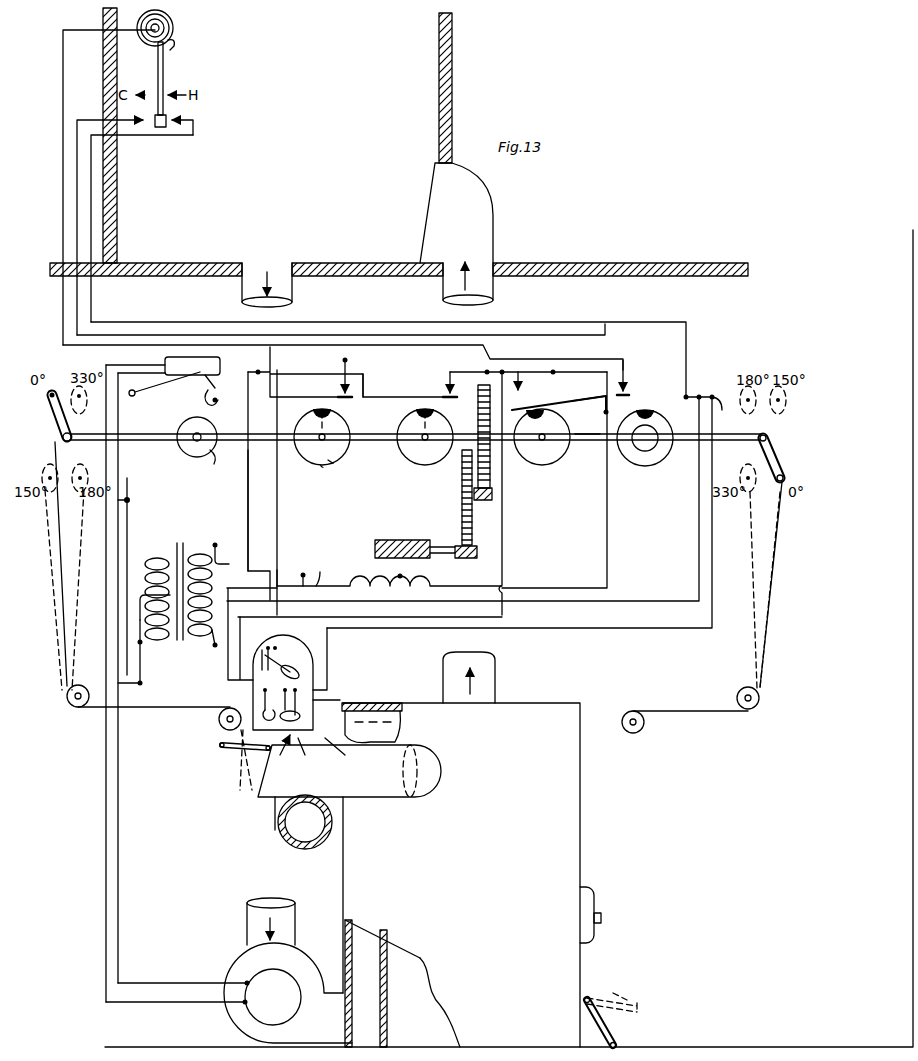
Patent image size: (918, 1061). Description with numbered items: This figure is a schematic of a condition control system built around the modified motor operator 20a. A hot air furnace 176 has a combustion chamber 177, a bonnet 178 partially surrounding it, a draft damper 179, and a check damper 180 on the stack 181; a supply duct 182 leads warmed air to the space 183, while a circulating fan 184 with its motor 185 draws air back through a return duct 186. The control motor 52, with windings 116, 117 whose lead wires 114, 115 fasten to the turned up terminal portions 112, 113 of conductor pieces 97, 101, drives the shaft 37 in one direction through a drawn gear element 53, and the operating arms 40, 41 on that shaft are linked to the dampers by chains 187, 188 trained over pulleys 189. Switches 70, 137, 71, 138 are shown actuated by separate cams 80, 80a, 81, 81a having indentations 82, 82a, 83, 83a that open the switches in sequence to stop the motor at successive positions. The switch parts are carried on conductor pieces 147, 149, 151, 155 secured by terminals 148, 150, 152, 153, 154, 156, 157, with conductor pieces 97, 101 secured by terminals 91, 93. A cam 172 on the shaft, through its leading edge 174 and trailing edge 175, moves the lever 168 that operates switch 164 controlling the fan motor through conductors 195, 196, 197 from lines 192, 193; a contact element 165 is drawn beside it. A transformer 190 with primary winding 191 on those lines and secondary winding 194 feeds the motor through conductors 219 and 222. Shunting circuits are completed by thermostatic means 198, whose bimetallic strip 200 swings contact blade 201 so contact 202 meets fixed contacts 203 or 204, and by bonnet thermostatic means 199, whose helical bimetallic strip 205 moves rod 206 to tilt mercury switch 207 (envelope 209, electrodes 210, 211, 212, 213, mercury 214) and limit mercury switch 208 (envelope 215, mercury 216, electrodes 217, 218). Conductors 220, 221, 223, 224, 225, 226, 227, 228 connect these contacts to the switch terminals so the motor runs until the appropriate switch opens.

The motor operator 20a is at (760, 300).
The shaft 37 is at (590, 442).
The operating arm 40 is at (778, 455).
The operating arm 41 is at (56, 430).
The motor 52 is at (360, 545).
The pinion 53 is at (480, 505).
The switch 70 is at (540, 395).
The switch 71 is at (336, 386).
The cam 80 is at (530, 470).
The cam 80a is at (640, 470).
The cam 81 is at (300, 470).
The cam 81a is at (405, 470).
The indentation 82 is at (529, 424).
The indentation 82a is at (628, 412).
The indentation 83 is at (325, 470).
The indentation 83a is at (453, 476).
The terminal 91 is at (588, 398).
The terminal 93 is at (287, 568).
The conductor piece 97 is at (621, 378).
The conductor piece 101 is at (303, 572).
The turned up portion 112 is at (600, 414).
The turned up portion 113 is at (330, 560).
The winding lead wire 114 is at (566, 586).
The winding lead wire 115 is at (338, 584).
The motor winding 116 is at (428, 568).
The motor winding 117 is at (360, 568).
The switch 137 is at (632, 394).
The switch 138 is at (443, 390).
The conductor piece 147 is at (370, 386).
The terminal 148 is at (252, 368).
The conductor piece 149 is at (625, 362).
The terminal 150 is at (348, 362).
The conductor piece 151 is at (699, 396).
The terminal 152 is at (712, 396).
The terminal 153 is at (686, 396).
The terminal 154 is at (727, 414).
The conductor piece 155 is at (553, 370).
The terminal 156 is at (497, 370).
The terminal 157 is at (470, 395).
The switch 164 is at (150, 395).
The contact 165 is at (222, 410).
The lever 168 is at (170, 402).
The cam 172 is at (188, 450).
The leading edge 174 is at (218, 470).
The trailing edge 175 is at (200, 410).
The hot air furnace 176 is at (472, 875).
The combustion chamber 177 is at (427, 978).
The bonnet 178 is at (383, 925).
The draft damper 179 is at (612, 1025).
The check damper 180 is at (218, 752).
The stack 181 is at (380, 800).
The supply duct 182 is at (493, 292).
The space 183 is at (341, 198).
The circulating fan 184 is at (308, 960).
The motor 185 is at (273, 997).
The return duct 186 is at (242, 297).
The chain 187 is at (772, 612).
The chain 188 is at (100, 712).
The pulley 189 is at (70, 688).
The transformer 190 is at (180, 535).
The primary winding 191 is at (158, 555).
The line 192 is at (128, 488).
The line 193 is at (141, 668).
The secondary winding 194 is at (200, 554).
The conductor 195 is at (118, 462).
The conductor 196 is at (106, 878).
The conductor 197 is at (118, 870).
The thermostatic means 198 is at (240, 90).
The thermostatic means 199 is at (342, 678).
The bimetallic strip 200 is at (172, 25).
The contact blade 201 is at (165, 62).
The contact 202 is at (168, 118).
The fixed contact 203 is at (190, 122).
The fixed contact 204 is at (138, 118).
The helical bimetallic strip 205 is at (380, 705).
The rod 206 is at (392, 712).
The mercury switch 207 is at (291, 754).
The mercury switch 208 is at (290, 672).
The glass envelope 209 is at (348, 755).
The electrode 210 is at (260, 715).
The electrode 211 is at (258, 700).
The electrode 212 is at (300, 700).
The electrode 213 is at (300, 714).
The globule of mercury 214 is at (317, 755).
The glass envelope 215 is at (313, 685).
The globule of mercury 216 is at (298, 676).
The electrode 217 is at (256, 648).
The electrode 218 is at (283, 648).
The conductor 219 is at (226, 556).
The conductor 220 is at (597, 342).
The conductor 221 is at (61, 78).
The conductor 222 is at (690, 546).
The conductor 223 is at (505, 502).
The conductor 224 is at (248, 518).
The conductor 225 is at (193, 140).
The conductor 226 is at (270, 627).
The conductor 227 is at (280, 530).
The conductor 228 is at (418, 628).